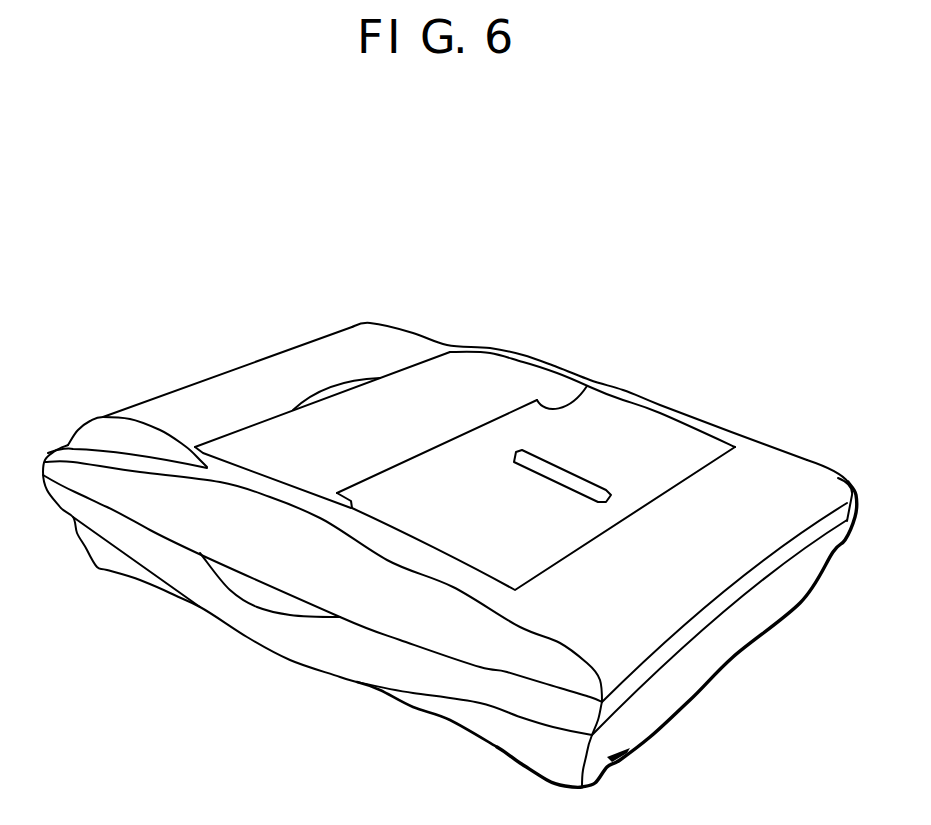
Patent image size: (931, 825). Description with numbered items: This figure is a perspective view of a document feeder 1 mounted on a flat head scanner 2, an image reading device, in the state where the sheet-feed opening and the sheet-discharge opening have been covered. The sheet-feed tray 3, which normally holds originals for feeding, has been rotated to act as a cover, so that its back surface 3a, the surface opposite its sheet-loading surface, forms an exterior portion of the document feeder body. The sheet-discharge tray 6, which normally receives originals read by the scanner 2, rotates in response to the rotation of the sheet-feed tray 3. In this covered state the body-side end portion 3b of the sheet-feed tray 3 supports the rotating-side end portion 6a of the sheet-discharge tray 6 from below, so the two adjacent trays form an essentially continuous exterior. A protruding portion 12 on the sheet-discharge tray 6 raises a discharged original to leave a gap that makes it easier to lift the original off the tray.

The document feeder 1 is at (783, 470).
The flat head scanner 2 is at (690, 670).
The sheet-feed tray 3 is at (455, 367).
The back surface 3a is at (497, 370).
The sheet-feeder-body-side end portion 3b is at (553, 380).
The sheet-discharge tray 6 is at (697, 445).
The rotating-side end portion 6a is at (592, 385).
The protruding portion 12 is at (598, 487).